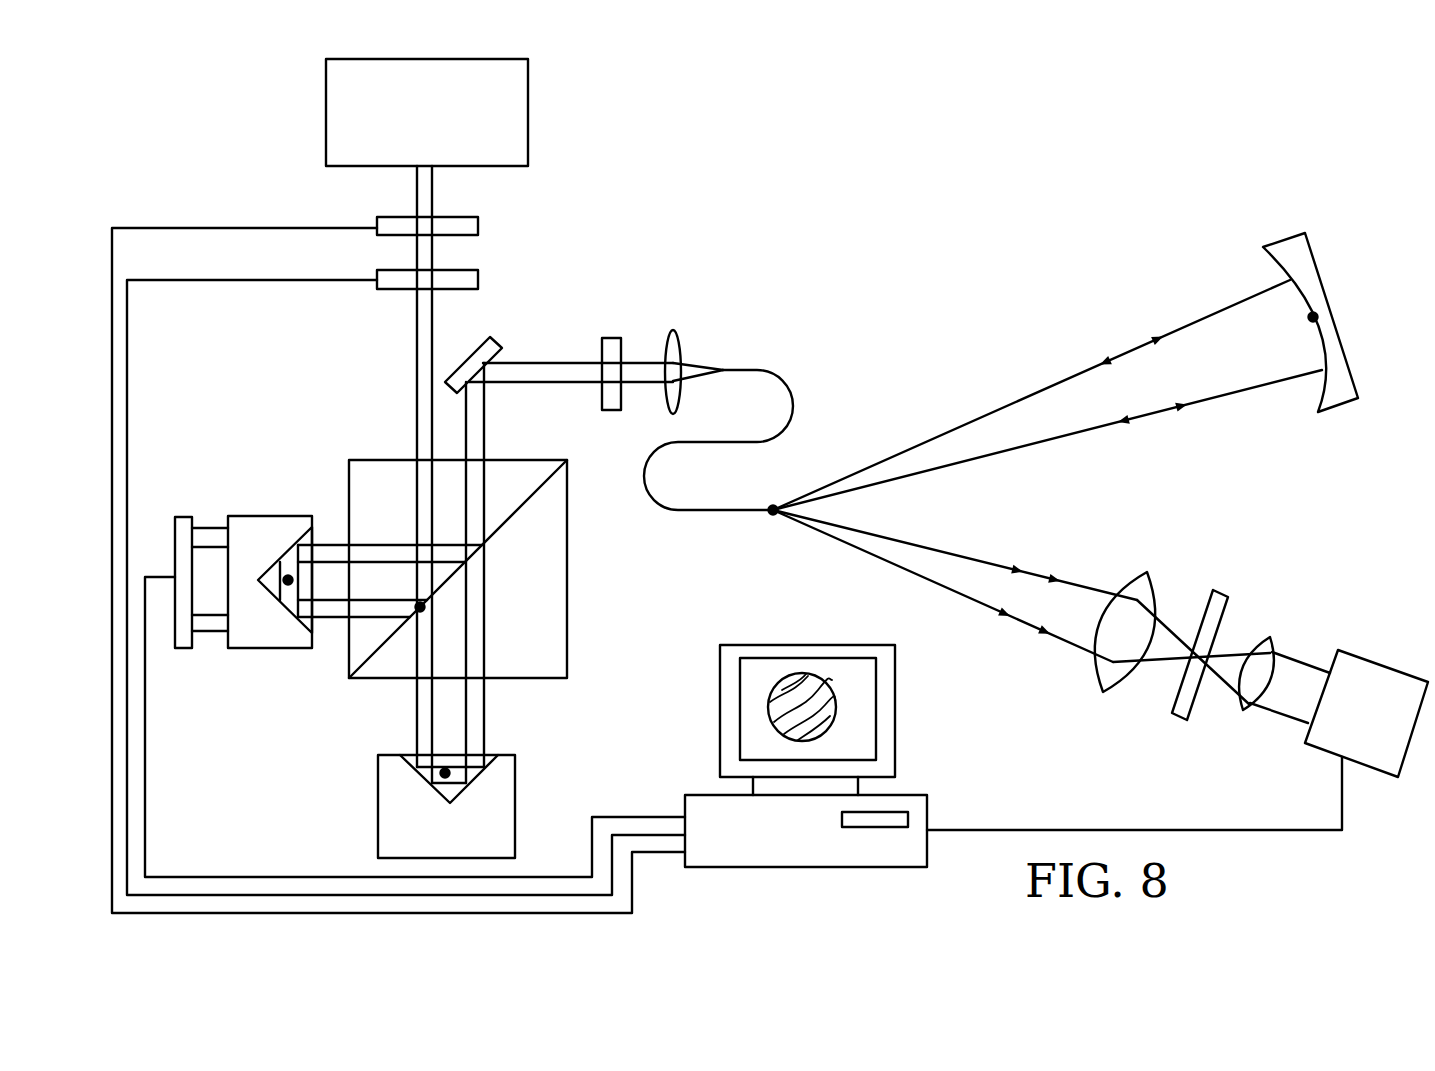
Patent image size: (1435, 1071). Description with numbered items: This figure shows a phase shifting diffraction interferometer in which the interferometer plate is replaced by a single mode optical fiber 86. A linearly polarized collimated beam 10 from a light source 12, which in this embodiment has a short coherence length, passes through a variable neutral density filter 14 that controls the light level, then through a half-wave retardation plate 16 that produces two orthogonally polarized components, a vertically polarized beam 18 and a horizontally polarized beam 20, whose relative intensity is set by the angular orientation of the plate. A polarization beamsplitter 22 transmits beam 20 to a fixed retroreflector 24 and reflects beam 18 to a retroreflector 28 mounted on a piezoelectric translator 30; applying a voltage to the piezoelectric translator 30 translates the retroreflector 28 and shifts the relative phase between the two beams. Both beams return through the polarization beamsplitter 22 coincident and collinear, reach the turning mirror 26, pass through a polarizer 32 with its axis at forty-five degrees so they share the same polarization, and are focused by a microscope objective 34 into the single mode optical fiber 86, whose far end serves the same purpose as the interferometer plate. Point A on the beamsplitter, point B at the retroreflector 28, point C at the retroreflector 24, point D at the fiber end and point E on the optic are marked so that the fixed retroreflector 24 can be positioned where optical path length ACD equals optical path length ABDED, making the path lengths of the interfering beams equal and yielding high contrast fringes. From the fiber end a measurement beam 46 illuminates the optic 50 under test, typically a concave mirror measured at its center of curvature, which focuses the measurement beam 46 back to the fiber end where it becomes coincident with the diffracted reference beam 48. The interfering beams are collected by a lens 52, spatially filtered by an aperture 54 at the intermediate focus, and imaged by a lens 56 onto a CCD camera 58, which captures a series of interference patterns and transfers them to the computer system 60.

The collimated beam 10 is at (412, 190).
The light source 12 is at (528, 106).
The variable neutral density filter 14 is at (478, 226).
The half-wave retardation plate 16 is at (478, 280).
The vertically polarized beam 18 is at (332, 622).
The horizontally polarized beam 20 is at (414, 706).
The polarization beamsplitter 22 is at (568, 602).
The fixed retroreflector 24 is at (515, 790).
The turning mirror 26 is at (497, 344).
The retroreflector 28 is at (291, 516).
The piezoelectric translator 30 is at (190, 517).
The polarizer 32 is at (612, 338).
The microscope objective 34 is at (680, 346).
The single mode optical fiber 86 is at (789, 388).
The measurement beam 46 is at (1028, 396).
The reference beam 48 is at (993, 566).
The optic under test 50 is at (1310, 351).
The lens 52 is at (1100, 672).
The aperture 54 is at (1225, 594).
The lens 56 is at (1247, 702).
The CCD camera 58 is at (1370, 665).
The computer system 60 is at (927, 808).
The point A is at (424, 609).
The point B is at (288, 584).
The point C is at (447, 768).
The point D is at (768, 516).
The point E is at (1309, 320).